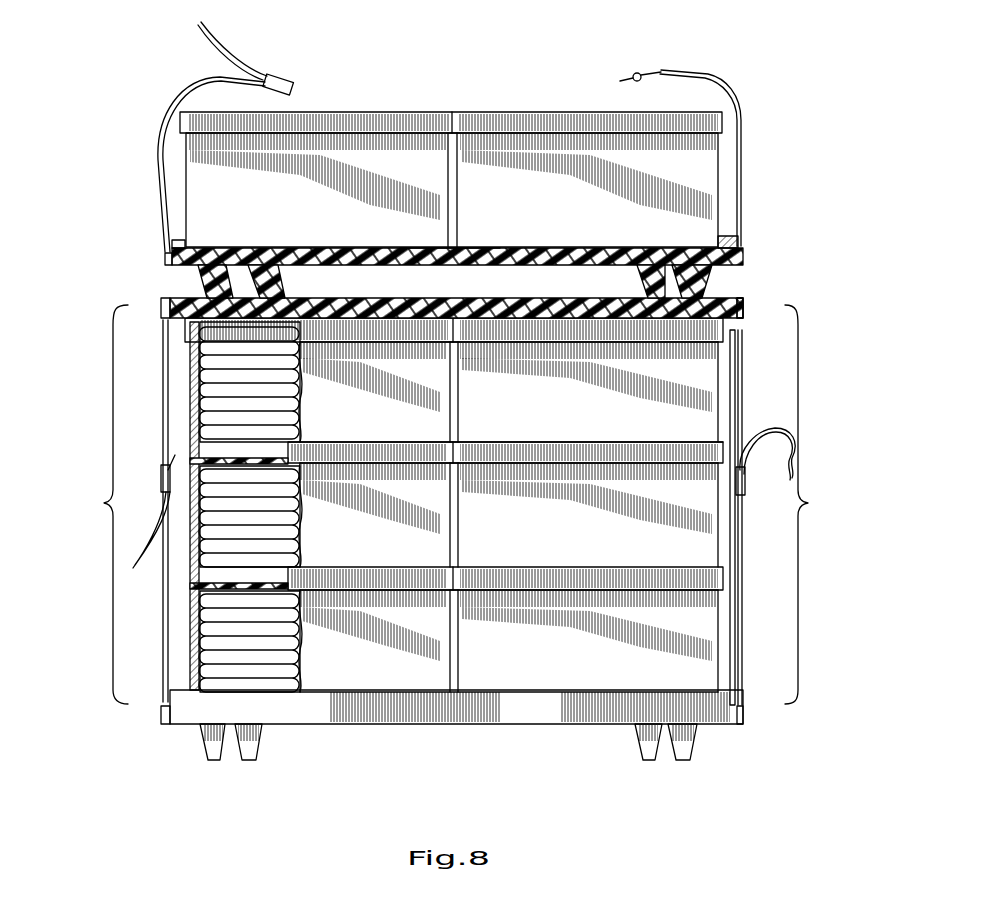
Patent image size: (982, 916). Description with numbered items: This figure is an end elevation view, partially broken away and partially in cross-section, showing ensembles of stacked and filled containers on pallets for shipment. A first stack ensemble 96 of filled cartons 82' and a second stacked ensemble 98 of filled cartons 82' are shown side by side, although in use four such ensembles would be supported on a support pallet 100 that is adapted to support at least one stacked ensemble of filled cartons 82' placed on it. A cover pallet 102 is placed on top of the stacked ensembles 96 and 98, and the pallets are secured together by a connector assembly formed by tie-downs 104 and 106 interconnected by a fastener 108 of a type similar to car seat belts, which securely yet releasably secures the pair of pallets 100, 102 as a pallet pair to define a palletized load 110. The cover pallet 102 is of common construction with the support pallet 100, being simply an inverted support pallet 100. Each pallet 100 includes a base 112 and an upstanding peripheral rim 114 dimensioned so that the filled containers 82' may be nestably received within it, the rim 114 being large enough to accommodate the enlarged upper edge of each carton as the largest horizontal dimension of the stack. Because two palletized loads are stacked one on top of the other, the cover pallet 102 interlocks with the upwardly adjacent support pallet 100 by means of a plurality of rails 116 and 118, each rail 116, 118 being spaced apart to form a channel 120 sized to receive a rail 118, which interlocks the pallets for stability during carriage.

The filled carton 82' is at (451, 402).
The first stack ensemble 96 is at (185, 504).
The second stacked ensemble 98 is at (787, 505).
The support pallet 100 is at (409, 266).
The cover pallet 102 is at (490, 305).
The tie-down 104 is at (722, 96).
The tie-down 106 is at (175, 100).
The fastener 108 is at (292, 72).
The palletized load 110 is at (744, 293).
The base 112 is at (483, 253).
The peripheral rim 114 is at (722, 236).
The rail 116 is at (640, 269).
The rail 118 is at (690, 264).
The channel 120 is at (232, 756).